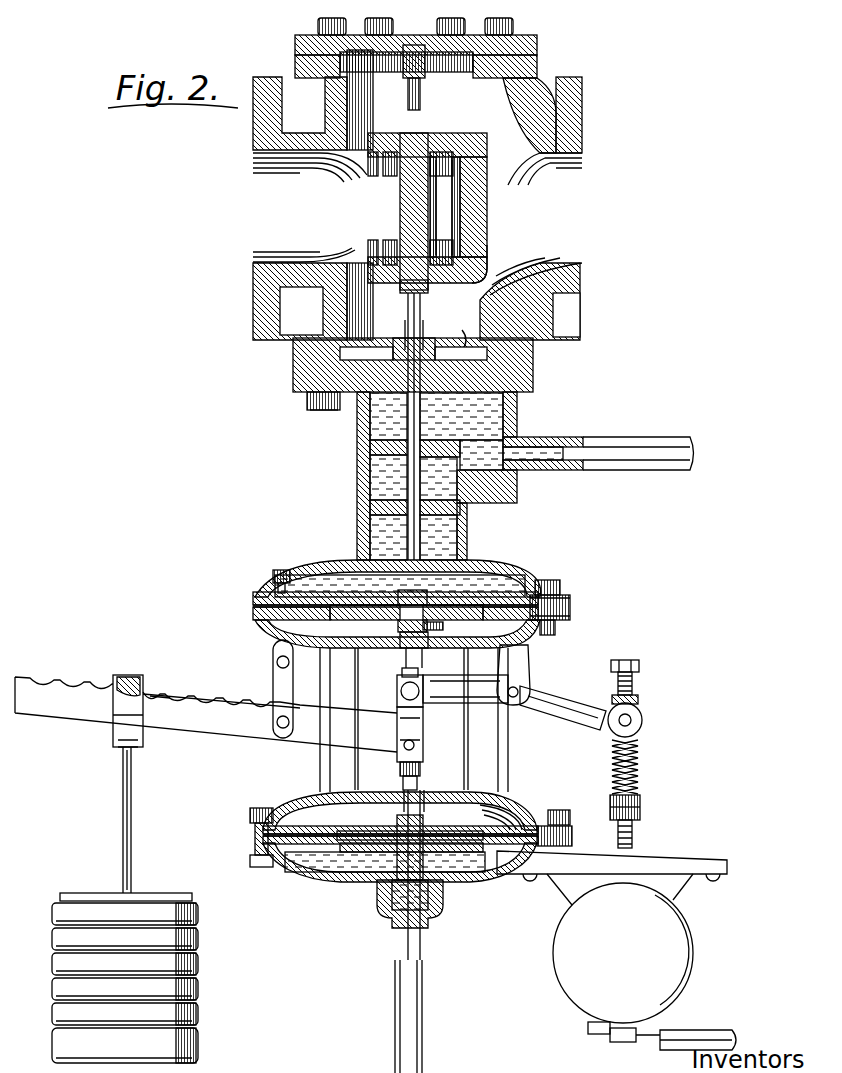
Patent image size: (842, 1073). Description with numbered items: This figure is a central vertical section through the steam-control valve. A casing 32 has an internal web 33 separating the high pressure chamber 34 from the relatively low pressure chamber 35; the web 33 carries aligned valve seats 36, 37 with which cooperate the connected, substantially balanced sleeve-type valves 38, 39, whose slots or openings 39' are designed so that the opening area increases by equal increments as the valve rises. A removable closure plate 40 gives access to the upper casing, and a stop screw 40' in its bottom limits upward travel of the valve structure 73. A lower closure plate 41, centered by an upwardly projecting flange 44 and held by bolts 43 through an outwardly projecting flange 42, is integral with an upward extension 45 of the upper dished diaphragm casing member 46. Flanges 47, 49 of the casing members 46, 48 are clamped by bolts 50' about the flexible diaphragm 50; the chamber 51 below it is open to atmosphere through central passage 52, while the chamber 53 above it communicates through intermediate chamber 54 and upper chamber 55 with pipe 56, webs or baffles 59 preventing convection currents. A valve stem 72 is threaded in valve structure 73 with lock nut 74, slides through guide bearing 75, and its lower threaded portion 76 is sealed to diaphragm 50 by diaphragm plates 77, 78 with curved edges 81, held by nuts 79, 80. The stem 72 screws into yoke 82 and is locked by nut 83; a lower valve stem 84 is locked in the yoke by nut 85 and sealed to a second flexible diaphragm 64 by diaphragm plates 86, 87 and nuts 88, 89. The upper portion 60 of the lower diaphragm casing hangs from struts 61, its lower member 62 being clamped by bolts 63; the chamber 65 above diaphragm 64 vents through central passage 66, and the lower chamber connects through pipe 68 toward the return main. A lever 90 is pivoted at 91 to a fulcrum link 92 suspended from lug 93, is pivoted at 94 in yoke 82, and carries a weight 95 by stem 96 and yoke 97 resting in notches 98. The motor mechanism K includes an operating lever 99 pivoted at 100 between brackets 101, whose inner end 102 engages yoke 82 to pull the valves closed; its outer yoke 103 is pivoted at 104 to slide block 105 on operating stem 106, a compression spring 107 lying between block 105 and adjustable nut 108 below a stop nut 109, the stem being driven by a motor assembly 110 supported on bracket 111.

The removable closure plate 40 is at (432, 48).
The stop screw 40' is at (430, 77).
The casing 32 is at (330, 98).
The high pressure chamber 34 is at (290, 212).
The relatively low pressure chamber 35 is at (570, 192).
The valve 38 is at (445, 150).
The valve seat 36 is at (470, 160).
The internal web 33 is at (490, 210).
The valve seat 37 is at (490, 243).
The slots or openings 39' is at (410, 175).
The valve 39 is at (427, 247).
The valve structure 73 is at (428, 210).
The lock nut 74 is at (430, 288).
The valve stem 72 is at (421, 312).
The guide bearing 75 is at (422, 344).
The upwardly projecting flange 44 is at (466, 327).
The closure plate 41 is at (435, 356).
The outwardly projecting flange 42 is at (534, 378).
The bolts 43 is at (310, 415).
The upper chamber 55 is at (380, 430).
The webs or baffles 59 is at (392, 446).
The intermediate chamber 54 is at (380, 478).
The upward extension 45 is at (364, 495).
The chamber above the diaphragm 53 is at (380, 548).
The pipe 56 is at (688, 444).
The upper dished diaphragm casing member 46 is at (505, 575).
The curved outer edges 81 is at (340, 605).
The flexible diaphragm 50 is at (427, 592).
The bolts 50' is at (557, 569).
The outwardly extending flange 47 is at (570, 596).
The outwardly extending flange 49 is at (556, 620).
The lower diaphragm casing member 48 is at (280, 612).
The chamber 51 is at (270, 635).
The diaphragm plate 77 is at (360, 610).
The lower threaded portion 76 is at (422, 592).
The nut 79 is at (428, 604).
The diaphragm plate 78 is at (445, 626).
The nut 80 is at (428, 650).
The central passage 52 is at (404, 655).
The nut 83 is at (402, 676).
The inner end of lever 102 is at (402, 693).
The yoke 82 is at (424, 716).
The pivot 94 is at (416, 745).
The pivot 100 is at (515, 700).
The brackets 101 is at (532, 666).
The operating lever 99 is at (598, 728).
The yoke 103 is at (642, 728).
The pivot 104 is at (633, 720).
The slide block 105 is at (640, 700).
The operating stem 106 is at (634, 686).
The stop nut 109 is at (636, 668).
The compression spring 107 is at (640, 768).
The adjustable nut 108 is at (641, 800).
The motor mechanism K is at (641, 838).
The bracket 111 is at (680, 892).
The motor assembly 110 is at (553, 975).
The struts 61 is at (318, 756).
The nut 85 is at (400, 772).
The lower valve stem 84 is at (402, 784).
The central passage 66 is at (424, 795).
The chamber 65 is at (430, 800).
The upper portion of the lower diaphragm casing 60 is at (520, 812).
The bolts 63 is at (569, 816).
The second flexible diaphragm 64 is at (303, 858).
The lower member 62 is at (470, 878).
The nut 89 is at (440, 904).
The nut 88 is at (424, 828).
The diaphragm plate 86 is at (476, 833).
The diaphragm plate 87 is at (356, 852).
The pipe 68 is at (394, 1035).
The lever 90 is at (215, 730).
The notches 98 is at (160, 694).
The yoke 97 is at (113, 738).
The stem 96 is at (123, 858).
The weight 95 is at (52, 936).
The fulcrum link 92 is at (273, 688).
The lug 93 is at (277, 663).
The pivot 91 is at (280, 730).